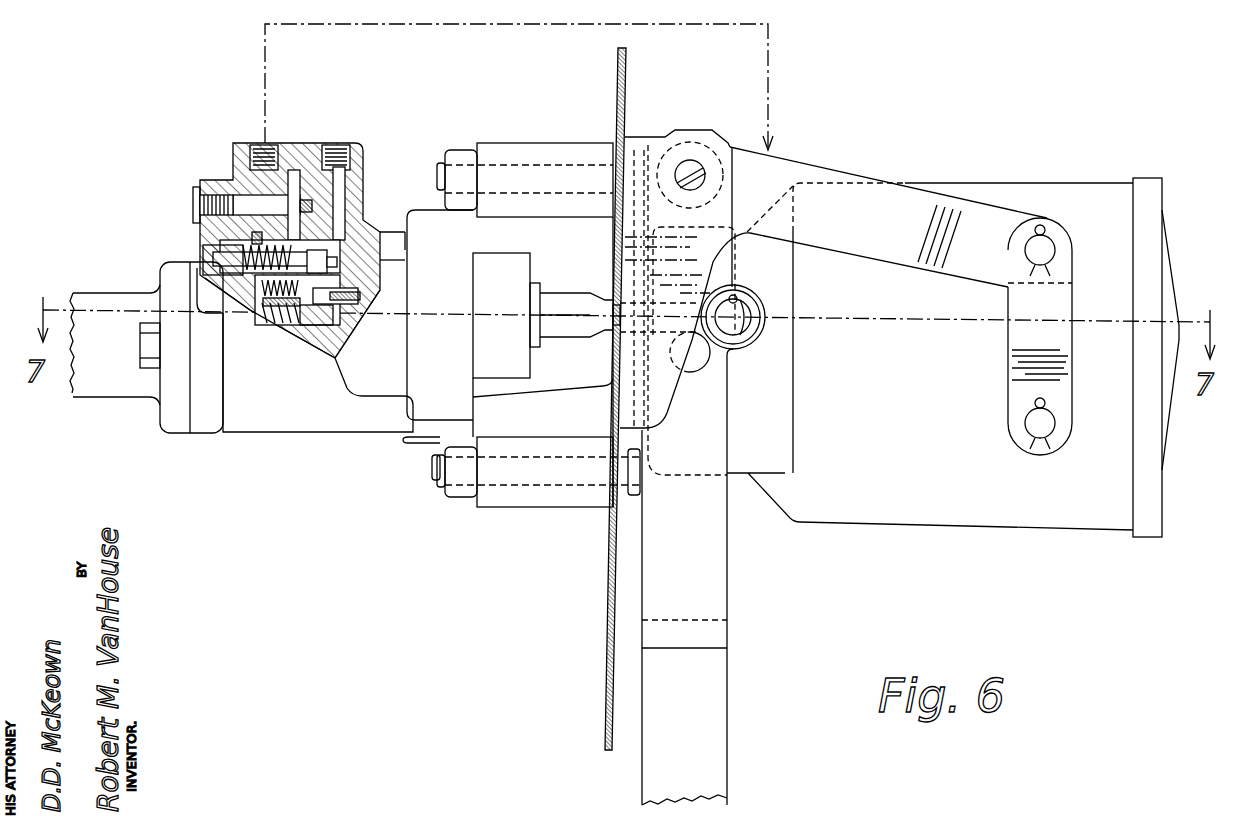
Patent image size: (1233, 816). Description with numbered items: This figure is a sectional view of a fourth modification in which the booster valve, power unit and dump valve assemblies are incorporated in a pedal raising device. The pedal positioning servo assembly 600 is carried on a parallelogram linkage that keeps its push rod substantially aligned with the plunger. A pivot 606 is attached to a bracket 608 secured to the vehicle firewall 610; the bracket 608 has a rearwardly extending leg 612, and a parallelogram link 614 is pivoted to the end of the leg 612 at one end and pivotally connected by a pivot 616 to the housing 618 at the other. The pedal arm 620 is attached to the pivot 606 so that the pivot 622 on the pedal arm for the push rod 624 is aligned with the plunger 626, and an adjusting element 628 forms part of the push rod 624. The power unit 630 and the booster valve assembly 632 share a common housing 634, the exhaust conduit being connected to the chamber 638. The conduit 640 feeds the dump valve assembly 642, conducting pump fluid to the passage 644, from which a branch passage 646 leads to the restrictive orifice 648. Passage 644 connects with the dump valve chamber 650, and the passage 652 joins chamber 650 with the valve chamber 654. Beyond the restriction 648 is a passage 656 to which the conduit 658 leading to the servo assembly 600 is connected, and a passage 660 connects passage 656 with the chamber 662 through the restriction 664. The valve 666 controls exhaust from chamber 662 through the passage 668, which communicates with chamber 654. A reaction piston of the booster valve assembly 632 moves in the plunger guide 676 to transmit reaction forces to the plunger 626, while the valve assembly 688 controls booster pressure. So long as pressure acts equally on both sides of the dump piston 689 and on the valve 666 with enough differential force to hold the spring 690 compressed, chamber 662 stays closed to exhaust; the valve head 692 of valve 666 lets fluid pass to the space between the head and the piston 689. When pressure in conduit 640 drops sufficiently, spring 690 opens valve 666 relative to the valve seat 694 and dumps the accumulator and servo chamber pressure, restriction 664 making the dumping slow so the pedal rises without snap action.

The pedal positioning servo assembly 600 is at (1027, 183).
The pivot 606 is at (688, 163).
The bracket 608 is at (663, 157).
The firewall 610 is at (620, 58).
The leg 612 is at (923, 200).
The parallelogram link 614 is at (1022, 337).
The pivotal connection 616 is at (1030, 430).
The housing 618 is at (1103, 197).
The pedal arm 620 is at (713, 577).
The pivot 622 is at (744, 317).
The push rod 624 is at (711, 342).
The plunger 626 is at (533, 316).
The adjusting element 628 is at (575, 293).
The power unit 630 is at (282, 432).
The booster valve assembly 632 is at (338, 355).
The common housing 634 is at (382, 427).
The chamber 638 is at (283, 320).
The conduit 640 is at (343, 157).
The dump valve assembly 642 is at (196, 199).
The passage 644 is at (337, 180).
The branch passage 646 is at (310, 207).
The restrictive orifice 648 is at (285, 200).
The dump valve chamber 650 is at (400, 239).
The passage 652 is at (400, 260).
The valve chamber 654 is at (335, 300).
The passage 656 is at (263, 207).
The conduit 658 is at (768, 50).
The passage 660 is at (240, 247).
The chamber 662 is at (327, 273).
The restriction 664 is at (258, 240).
The dump valve 666 is at (286, 252).
The passage 668 is at (250, 300).
The plunger guide 676 is at (513, 267).
The valve assembly 688 is at (307, 327).
The dump piston 689 is at (337, 280).
The spring 690 is at (228, 300).
The valve head 692 is at (320, 253).
The valve seat 694 is at (230, 265).